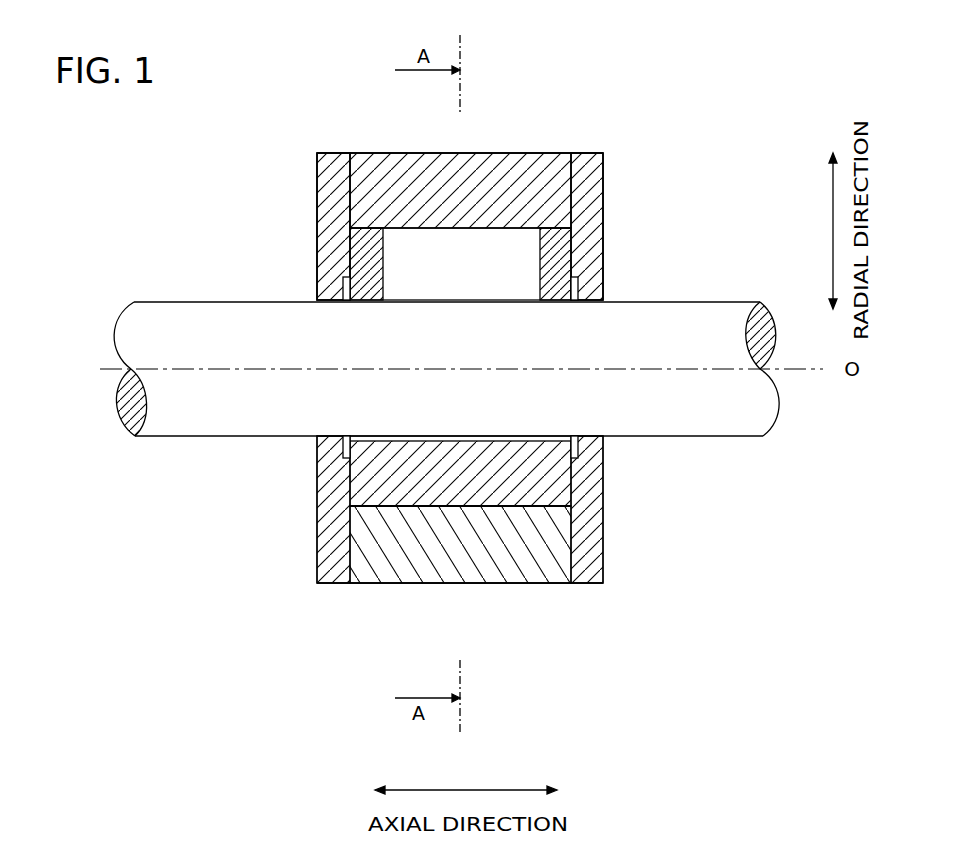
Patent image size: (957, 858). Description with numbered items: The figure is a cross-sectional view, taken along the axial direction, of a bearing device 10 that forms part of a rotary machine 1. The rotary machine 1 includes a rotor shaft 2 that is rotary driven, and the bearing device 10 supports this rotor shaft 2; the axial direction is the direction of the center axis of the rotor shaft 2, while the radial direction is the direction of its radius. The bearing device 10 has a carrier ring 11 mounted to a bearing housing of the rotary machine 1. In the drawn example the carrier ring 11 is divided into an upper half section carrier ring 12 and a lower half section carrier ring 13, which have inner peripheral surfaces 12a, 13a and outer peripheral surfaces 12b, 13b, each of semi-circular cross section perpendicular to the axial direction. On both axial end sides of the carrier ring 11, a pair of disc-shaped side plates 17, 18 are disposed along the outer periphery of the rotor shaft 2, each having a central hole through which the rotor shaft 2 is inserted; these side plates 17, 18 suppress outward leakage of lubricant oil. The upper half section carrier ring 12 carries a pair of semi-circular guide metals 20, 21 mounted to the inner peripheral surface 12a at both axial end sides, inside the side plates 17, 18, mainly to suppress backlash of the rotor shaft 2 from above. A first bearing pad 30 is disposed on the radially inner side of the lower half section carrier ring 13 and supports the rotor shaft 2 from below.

The rotary machine 1 is at (685, 31).
The rotor shaft 2 is at (728, 308).
The bearing device 10 is at (653, 191).
The carrier ring 11 is at (530, 172).
The upper half section carrier ring 12 is at (355, 190).
The inner peripheral surface 12a is at (352, 230).
The outer peripheral surface 12b is at (382, 153).
The lower half section carrier ring 13 is at (465, 585).
The inner peripheral surface 13a is at (318, 517).
The outer peripheral surface 13b is at (391, 585).
The side plate 17 is at (318, 260).
The side plate 18 is at (601, 240).
The guide metal 20 is at (372, 270).
The guide metal 21 is at (548, 272).
The first bearing pad 30 is at (601, 477).